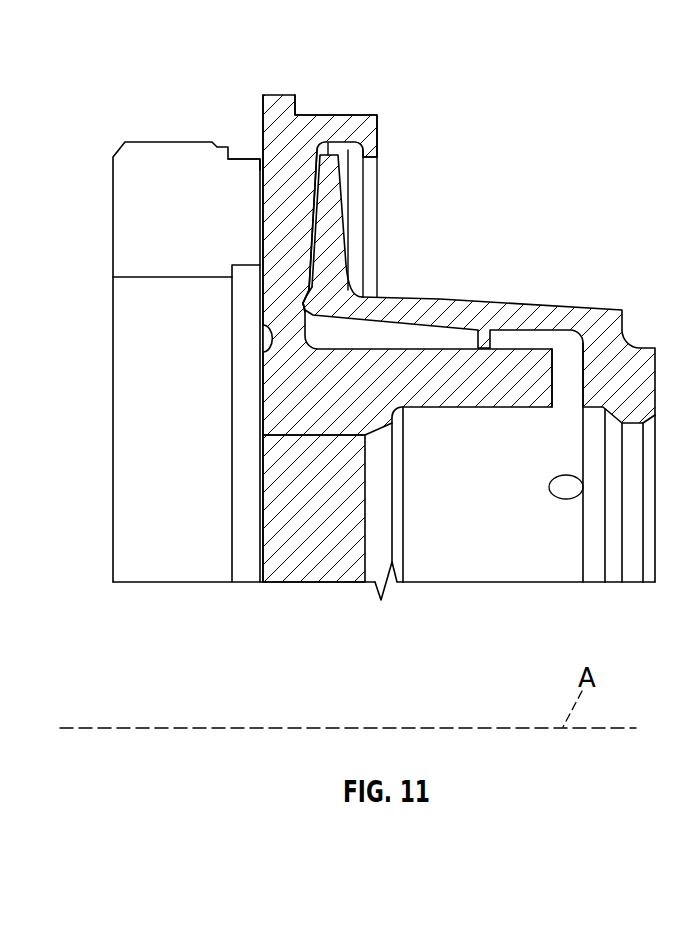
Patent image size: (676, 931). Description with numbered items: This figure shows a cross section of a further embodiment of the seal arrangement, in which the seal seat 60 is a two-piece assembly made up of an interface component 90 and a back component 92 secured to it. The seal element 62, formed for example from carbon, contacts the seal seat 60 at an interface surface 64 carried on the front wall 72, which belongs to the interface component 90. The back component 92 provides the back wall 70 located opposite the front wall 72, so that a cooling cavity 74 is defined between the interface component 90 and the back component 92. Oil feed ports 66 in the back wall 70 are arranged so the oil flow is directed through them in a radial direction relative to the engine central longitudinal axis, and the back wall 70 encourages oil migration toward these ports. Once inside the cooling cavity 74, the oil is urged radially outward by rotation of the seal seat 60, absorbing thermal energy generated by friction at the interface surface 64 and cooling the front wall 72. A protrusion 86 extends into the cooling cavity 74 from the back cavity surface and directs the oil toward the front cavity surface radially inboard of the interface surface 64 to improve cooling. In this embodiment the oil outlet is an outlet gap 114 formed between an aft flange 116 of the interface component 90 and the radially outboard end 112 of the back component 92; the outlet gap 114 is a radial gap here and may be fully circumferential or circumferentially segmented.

The seal seat 60 is at (424, 94).
The seal element 62 is at (190, 223).
The interface surface 64 is at (262, 165).
The oil feed ports 66 is at (567, 410).
The back wall 70 is at (283, 313).
The front wall 72 is at (460, 312).
The cooling cavity 74 is at (312, 265).
The protrusion 86 is at (305, 307).
The interface component 90 is at (152, 104).
The back component 92 is at (472, 283).
The radially outboard end 112 is at (332, 198).
The outlet gap 114 is at (345, 167).
The aft flange 116 is at (368, 133).